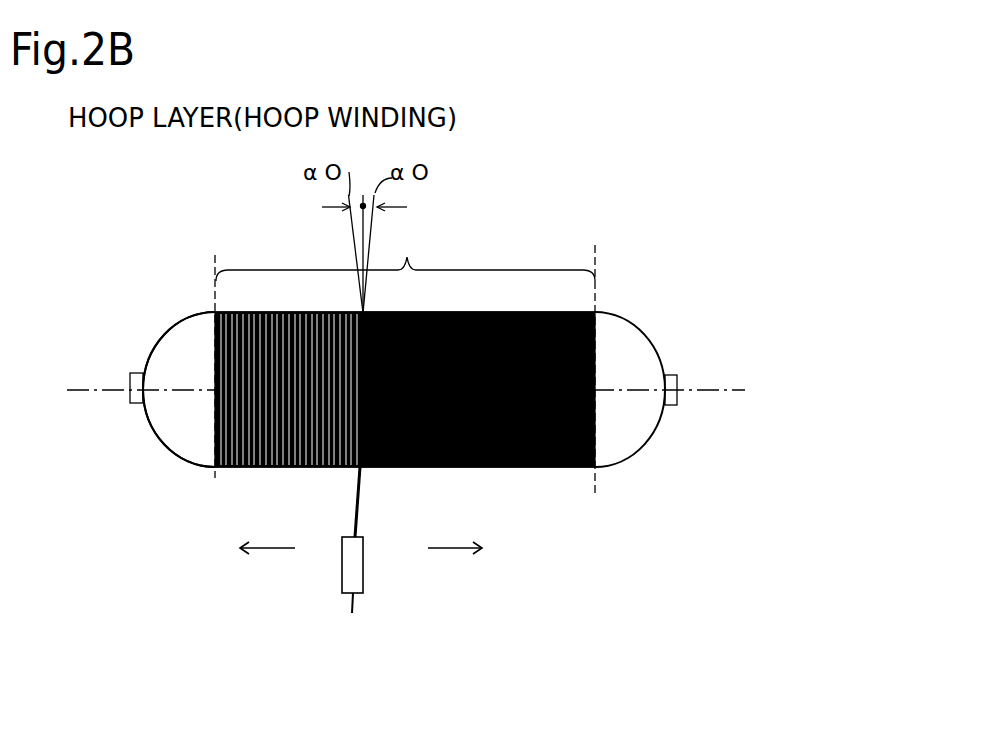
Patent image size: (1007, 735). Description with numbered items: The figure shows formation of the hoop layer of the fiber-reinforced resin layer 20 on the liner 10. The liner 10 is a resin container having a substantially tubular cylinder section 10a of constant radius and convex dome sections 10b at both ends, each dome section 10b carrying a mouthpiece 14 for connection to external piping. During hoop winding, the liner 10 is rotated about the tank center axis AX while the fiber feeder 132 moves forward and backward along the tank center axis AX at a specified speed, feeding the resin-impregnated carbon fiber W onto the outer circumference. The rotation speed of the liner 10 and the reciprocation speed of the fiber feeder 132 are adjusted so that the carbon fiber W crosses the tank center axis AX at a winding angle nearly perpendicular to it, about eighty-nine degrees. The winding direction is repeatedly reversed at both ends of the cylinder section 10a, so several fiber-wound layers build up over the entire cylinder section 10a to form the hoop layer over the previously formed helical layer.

The liner 10 is at (632, 327).
The cylinder section 10a is at (405, 358).
The dome section 10b is at (170, 422).
The mouthpiece 14 is at (133, 397).
The fiber-reinforced resin layer 20 is at (375, 470).
The fiber feeder 132 is at (363, 567).
The resin-impregnated carbon fiber W is at (355, 485).
The tank center axis AX is at (427, 394).